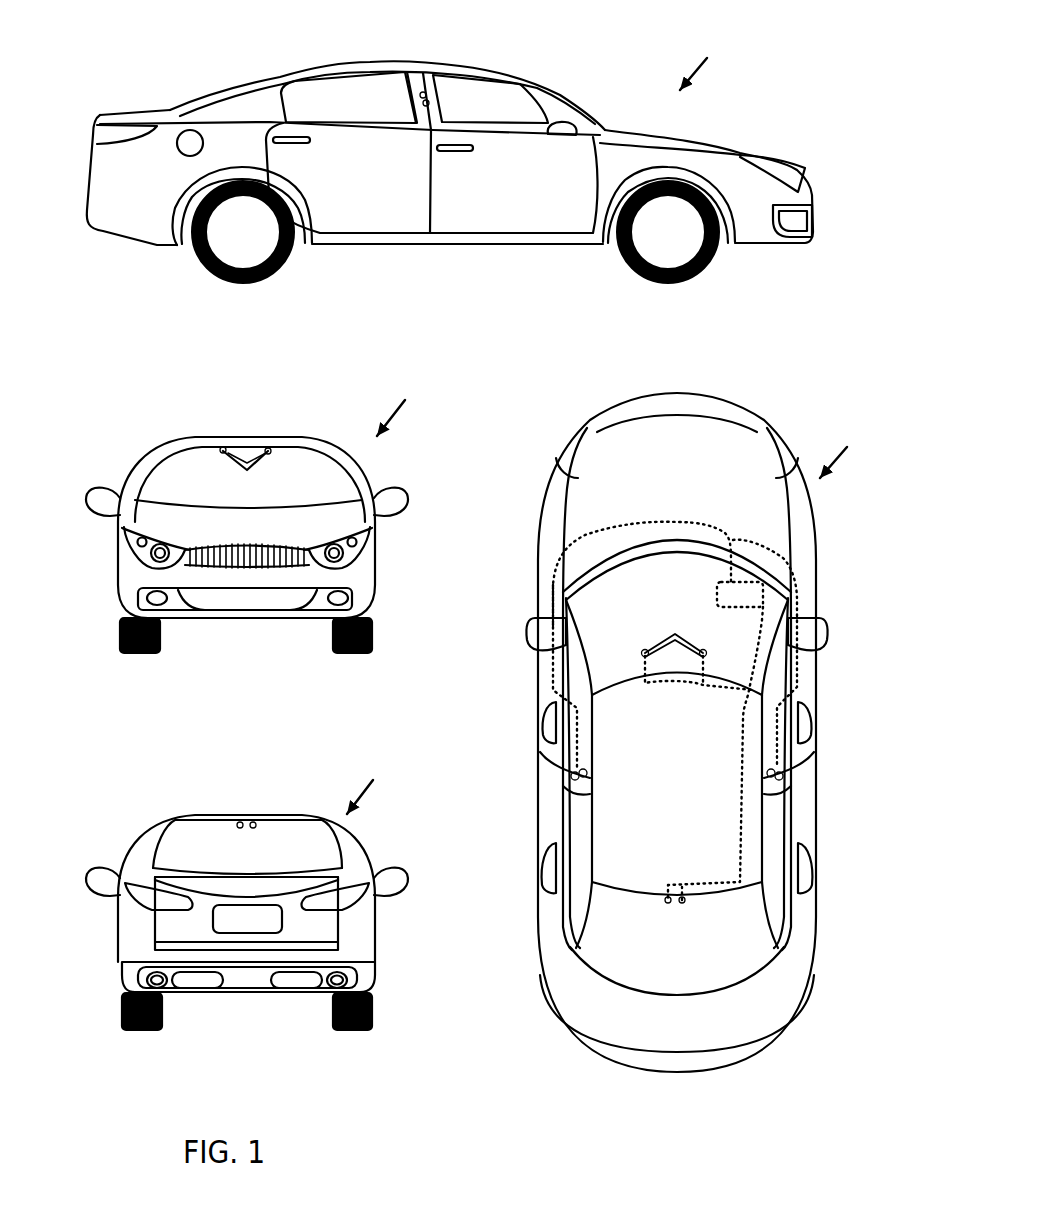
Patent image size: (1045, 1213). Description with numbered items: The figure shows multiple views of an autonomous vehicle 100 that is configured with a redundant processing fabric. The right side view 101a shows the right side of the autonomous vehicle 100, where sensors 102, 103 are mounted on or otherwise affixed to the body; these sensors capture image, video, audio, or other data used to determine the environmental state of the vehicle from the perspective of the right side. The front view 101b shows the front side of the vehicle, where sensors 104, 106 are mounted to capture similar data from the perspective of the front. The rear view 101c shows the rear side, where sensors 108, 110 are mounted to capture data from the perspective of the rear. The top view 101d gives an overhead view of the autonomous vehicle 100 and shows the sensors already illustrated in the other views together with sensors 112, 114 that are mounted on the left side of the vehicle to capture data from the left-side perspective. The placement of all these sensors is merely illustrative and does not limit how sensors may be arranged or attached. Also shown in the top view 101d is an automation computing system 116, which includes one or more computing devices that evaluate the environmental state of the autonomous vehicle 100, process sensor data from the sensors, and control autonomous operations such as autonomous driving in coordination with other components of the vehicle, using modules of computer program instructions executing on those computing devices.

The autonomous vehicle 100 is at (717, 150).
The right side view 101a is at (716, 60).
The front view 101b is at (413, 405).
The rear view 101c is at (381, 784).
The top view 101d is at (857, 447).
The sensor 102 is at (428, 103).
The sensor 103 is at (425, 95).
The sensor 104 is at (224, 449).
The sensor 106 is at (268, 449).
The sensor 108 is at (240, 822).
The sensor 110 is at (253, 822).
The sensor 112 is at (572, 780).
The sensor 114 is at (582, 788).
The automation computing system 116 is at (748, 582).